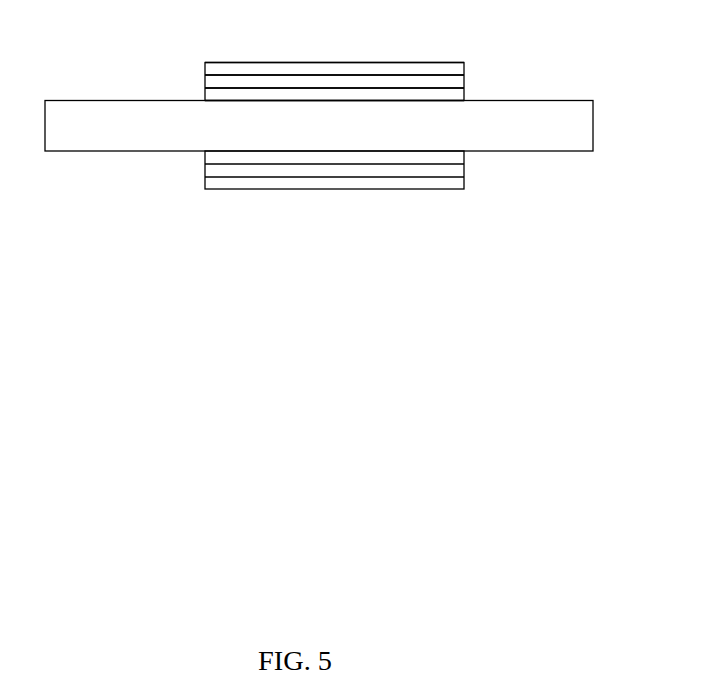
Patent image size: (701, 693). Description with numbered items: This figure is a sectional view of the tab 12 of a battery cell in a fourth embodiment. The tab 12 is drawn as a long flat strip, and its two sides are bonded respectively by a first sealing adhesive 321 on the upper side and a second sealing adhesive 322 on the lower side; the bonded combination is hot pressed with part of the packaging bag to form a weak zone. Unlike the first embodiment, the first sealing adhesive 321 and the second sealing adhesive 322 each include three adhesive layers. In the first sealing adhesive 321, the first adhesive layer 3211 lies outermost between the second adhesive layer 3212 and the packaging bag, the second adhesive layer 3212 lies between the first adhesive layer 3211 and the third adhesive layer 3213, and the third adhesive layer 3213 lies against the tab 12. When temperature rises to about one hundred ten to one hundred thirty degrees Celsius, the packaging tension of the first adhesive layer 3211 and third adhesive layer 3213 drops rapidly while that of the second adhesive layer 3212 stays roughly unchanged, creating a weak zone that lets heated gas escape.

The tab 12 is at (572, 108).
The first sealing adhesive 321 is at (403, 53).
The first adhesive layer 3211 is at (422, 70).
The second adhesive layer 3212 is at (443, 81).
The third adhesive layer 3213 is at (455, 91).
The second sealing adhesive 322 is at (478, 175).